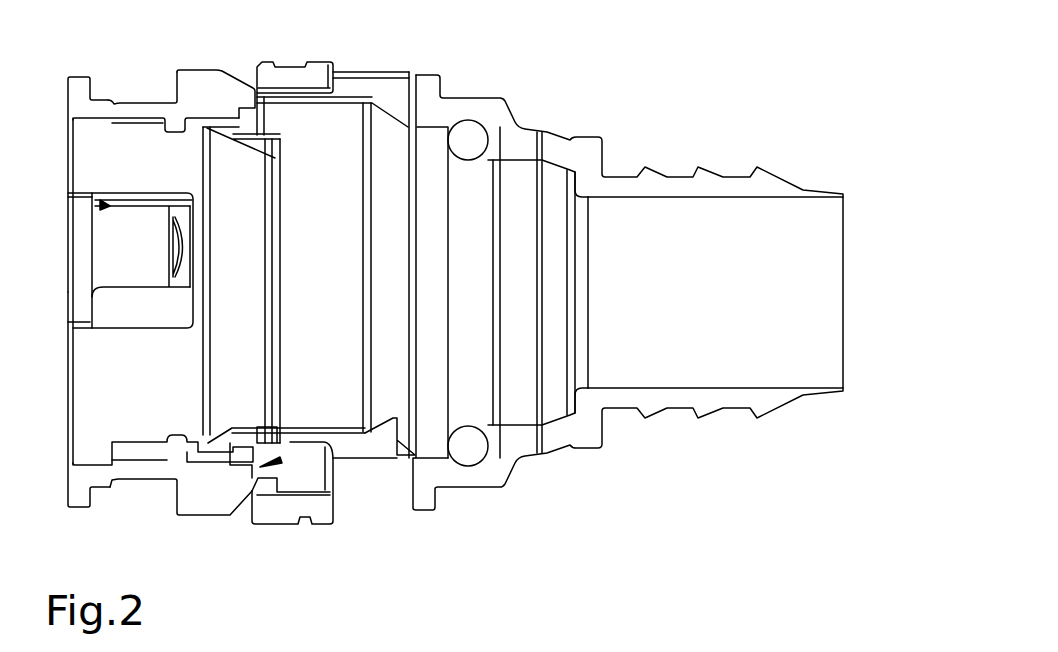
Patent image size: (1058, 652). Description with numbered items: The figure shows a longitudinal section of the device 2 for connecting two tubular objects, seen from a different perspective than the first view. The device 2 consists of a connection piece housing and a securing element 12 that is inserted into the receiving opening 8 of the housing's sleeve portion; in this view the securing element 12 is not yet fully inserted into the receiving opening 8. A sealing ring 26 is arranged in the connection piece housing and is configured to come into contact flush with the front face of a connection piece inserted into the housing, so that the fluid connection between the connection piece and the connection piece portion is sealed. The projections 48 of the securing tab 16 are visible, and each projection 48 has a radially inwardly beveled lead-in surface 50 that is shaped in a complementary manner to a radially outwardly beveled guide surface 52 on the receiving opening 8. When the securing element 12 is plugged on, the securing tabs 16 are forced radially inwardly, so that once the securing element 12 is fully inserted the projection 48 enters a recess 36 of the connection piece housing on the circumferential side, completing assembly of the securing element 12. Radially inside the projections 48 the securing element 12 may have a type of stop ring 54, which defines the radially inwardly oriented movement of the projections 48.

The device 2 is at (478, 54).
The receiving opening 8 is at (240, 478).
The securing element 12 is at (78, 80).
The securing tab 16 is at (138, 112).
The sealing ring 26 is at (475, 403).
The recess 36 is at (390, 86).
The projection 48 is at (208, 82).
The lead-in surface 50 is at (250, 71).
The guide surface 52 is at (265, 490).
The stop ring 54 is at (270, 147).